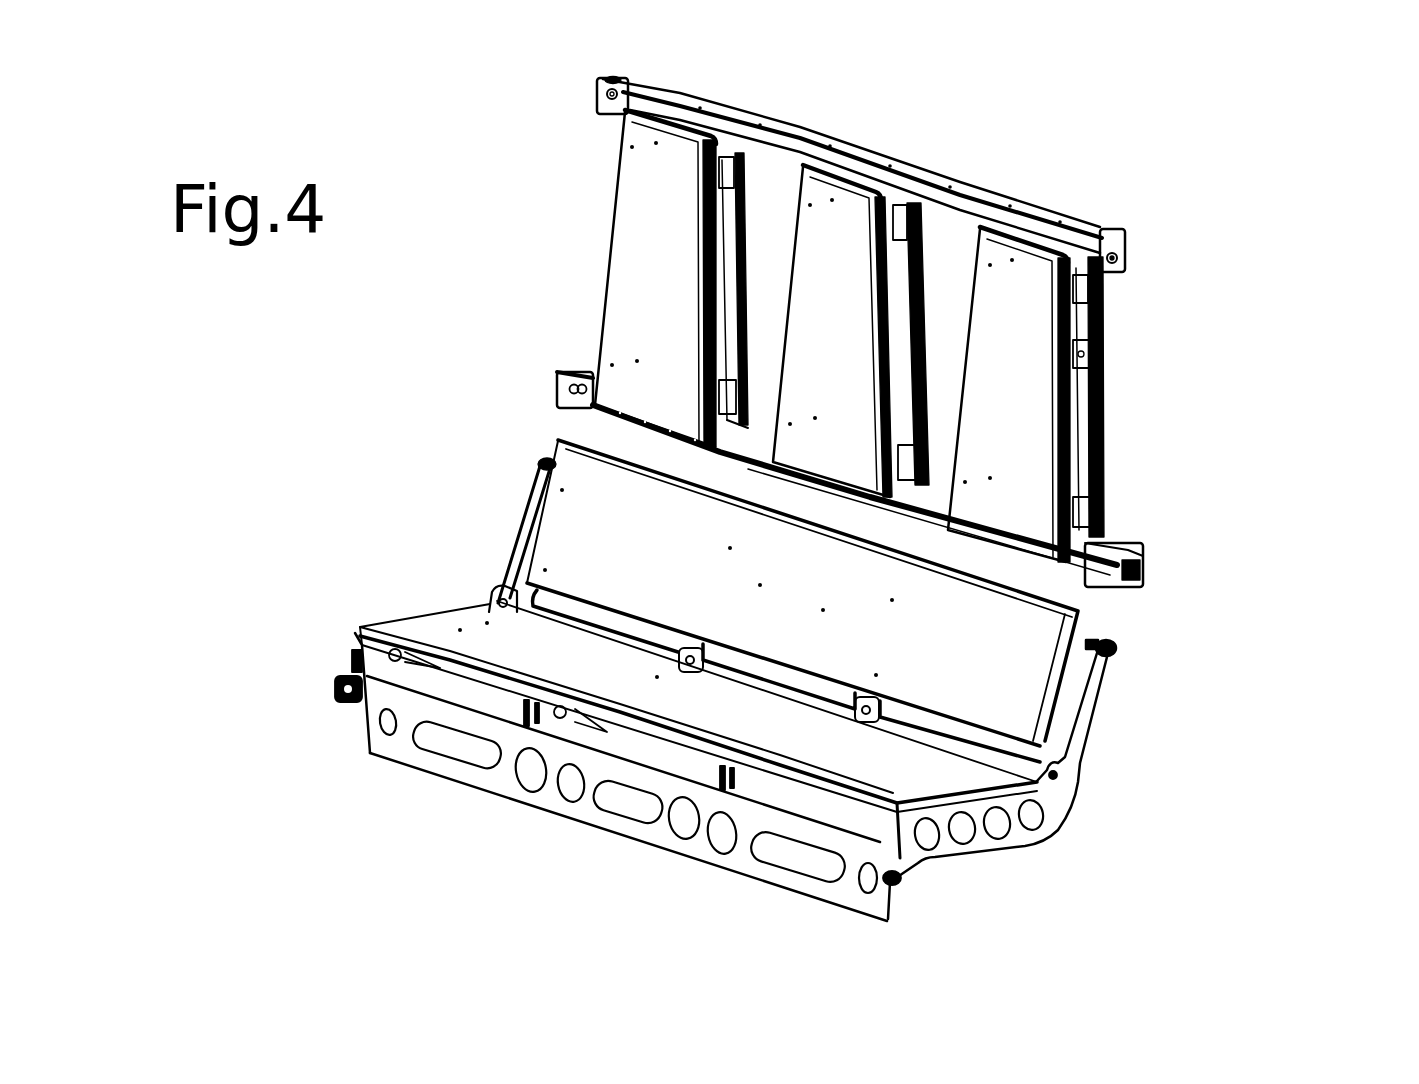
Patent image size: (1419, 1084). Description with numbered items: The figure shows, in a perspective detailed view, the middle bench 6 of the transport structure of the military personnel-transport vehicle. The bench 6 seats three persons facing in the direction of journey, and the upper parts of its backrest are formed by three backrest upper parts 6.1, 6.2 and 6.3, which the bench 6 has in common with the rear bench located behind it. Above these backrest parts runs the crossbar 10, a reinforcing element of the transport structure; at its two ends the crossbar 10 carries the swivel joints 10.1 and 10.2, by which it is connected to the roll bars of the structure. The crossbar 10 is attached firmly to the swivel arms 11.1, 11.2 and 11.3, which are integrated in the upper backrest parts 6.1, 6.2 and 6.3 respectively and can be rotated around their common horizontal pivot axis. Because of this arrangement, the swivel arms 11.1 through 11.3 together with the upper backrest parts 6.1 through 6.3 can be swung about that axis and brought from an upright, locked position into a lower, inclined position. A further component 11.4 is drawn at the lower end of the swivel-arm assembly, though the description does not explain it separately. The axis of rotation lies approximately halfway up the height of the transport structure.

The bench 6 is at (458, 630).
The upper part of backrest 6.1 is at (1032, 322).
The upper part of backrest 6.2 is at (837, 287).
The upper part of backrest 6.3 is at (628, 250).
The crossbar 10 is at (877, 164).
The swivel joint 10.1 is at (1126, 258).
The swivel joint 10.2 is at (600, 80).
The swivel arm 11.1 is at (1080, 420).
The swivel arm 11.2 is at (897, 360).
The swivel arm 11.3 is at (718, 316).
The lower end block of support frame 11.4 is at (1140, 548).